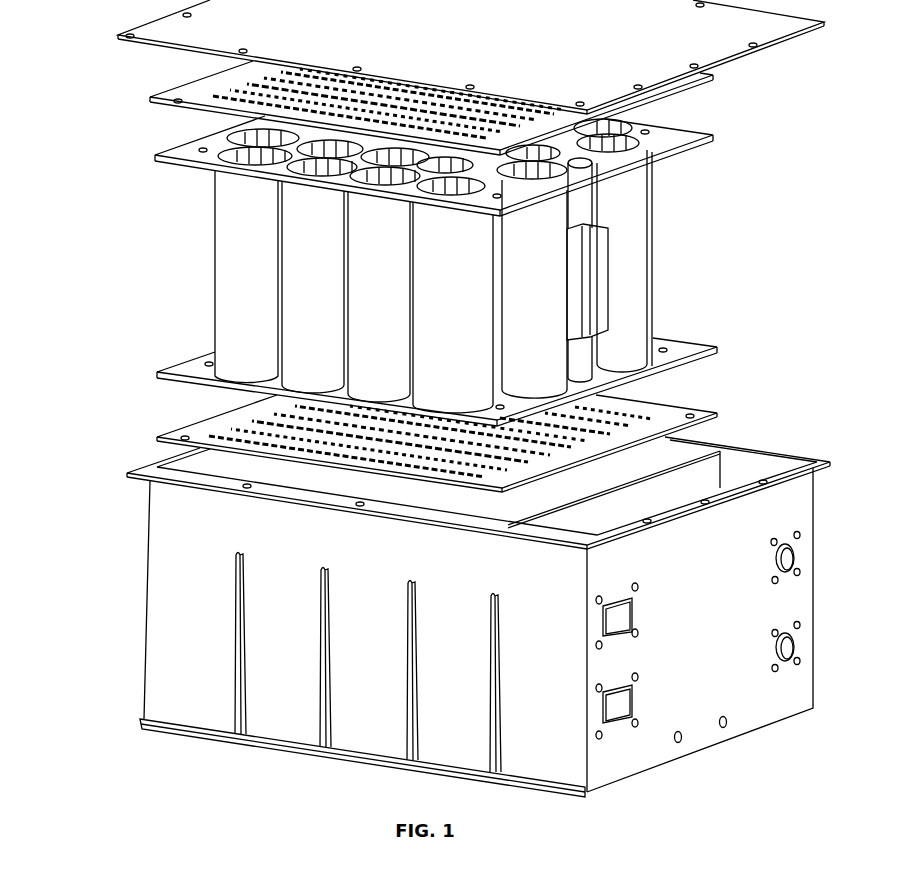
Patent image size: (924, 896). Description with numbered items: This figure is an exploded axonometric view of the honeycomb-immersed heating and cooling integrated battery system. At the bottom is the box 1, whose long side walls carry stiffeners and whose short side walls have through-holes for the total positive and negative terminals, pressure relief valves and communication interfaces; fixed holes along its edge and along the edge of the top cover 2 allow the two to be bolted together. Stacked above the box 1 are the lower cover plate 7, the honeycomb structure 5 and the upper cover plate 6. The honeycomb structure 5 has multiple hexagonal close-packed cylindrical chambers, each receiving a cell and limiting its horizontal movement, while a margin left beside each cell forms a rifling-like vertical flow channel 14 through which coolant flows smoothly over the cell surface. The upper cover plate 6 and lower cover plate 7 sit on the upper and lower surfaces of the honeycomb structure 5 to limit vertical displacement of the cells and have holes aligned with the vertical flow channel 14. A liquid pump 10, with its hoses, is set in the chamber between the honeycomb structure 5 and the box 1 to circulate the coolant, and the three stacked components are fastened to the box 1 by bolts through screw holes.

The box 1 is at (160, 510).
The top cover 2 is at (150, 43).
The honeycomb structure 5 is at (245, 218).
The upper cover plate 6 is at (200, 103).
The lower cover plate 7 is at (165, 436).
The liquid pump 10 is at (590, 298).
The vertical flow channel 14 is at (232, 165).